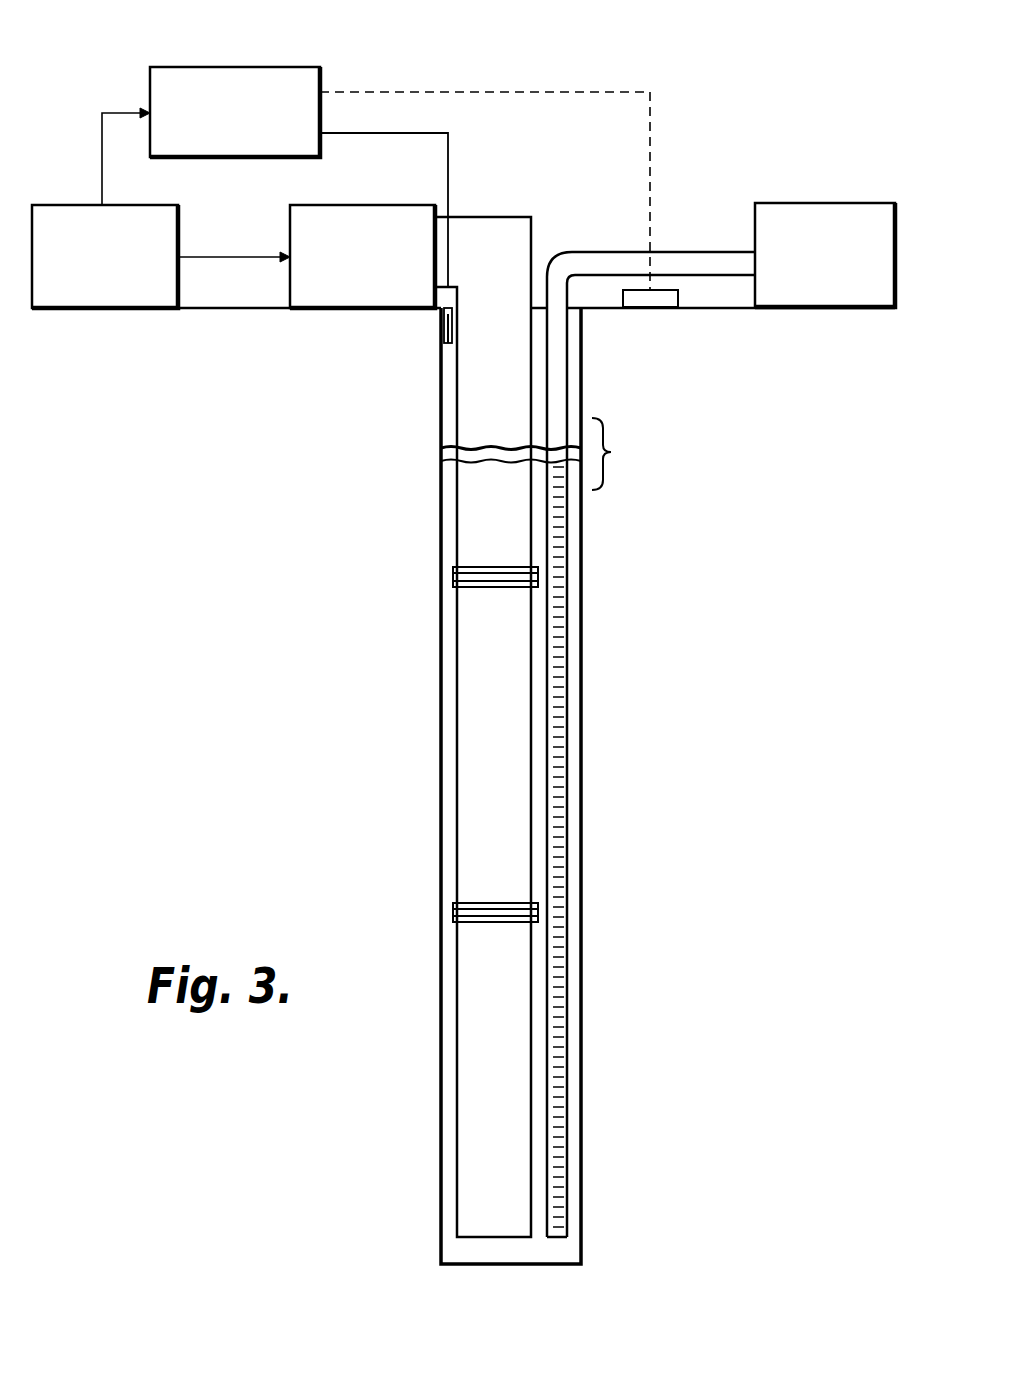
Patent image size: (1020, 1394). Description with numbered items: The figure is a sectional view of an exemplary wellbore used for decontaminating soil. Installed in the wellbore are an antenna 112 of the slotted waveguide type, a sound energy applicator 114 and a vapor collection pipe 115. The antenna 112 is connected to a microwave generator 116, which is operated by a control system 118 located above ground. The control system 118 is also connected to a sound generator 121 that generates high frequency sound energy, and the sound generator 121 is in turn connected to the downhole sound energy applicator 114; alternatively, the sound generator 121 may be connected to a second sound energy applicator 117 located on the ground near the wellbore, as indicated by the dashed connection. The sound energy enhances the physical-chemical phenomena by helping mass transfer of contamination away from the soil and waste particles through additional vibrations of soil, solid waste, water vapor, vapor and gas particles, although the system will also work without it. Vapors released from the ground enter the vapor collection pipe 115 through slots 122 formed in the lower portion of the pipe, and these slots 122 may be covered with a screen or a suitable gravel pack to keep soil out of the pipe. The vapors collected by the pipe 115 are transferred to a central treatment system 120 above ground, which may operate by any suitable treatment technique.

The antenna 112 is at (480, 690).
The sound energy applicator 114 is at (440, 329).
The vapor collection pipe 115 is at (562, 797).
The microwave generator 116 is at (338, 205).
The sound energy applicator 117 is at (643, 302).
The control system 118 is at (180, 217).
The central treatment system 120 is at (858, 203).
The sound generator 121 is at (282, 66).
The slots 122 is at (555, 988).